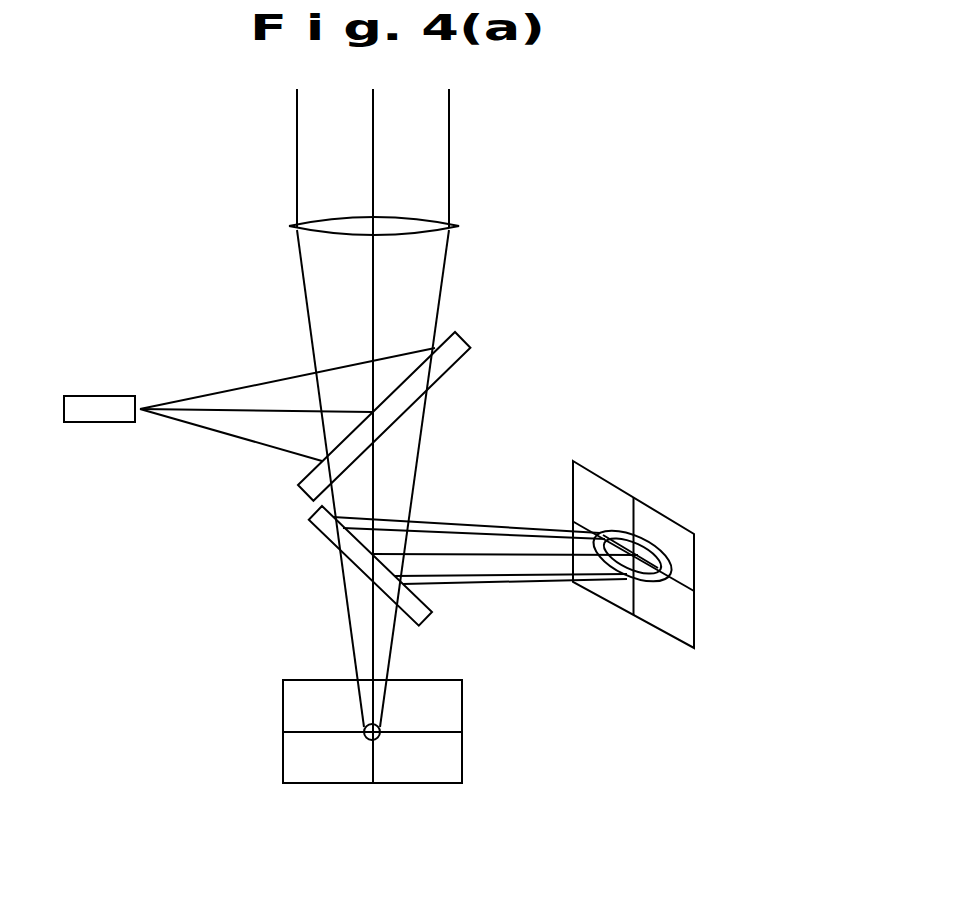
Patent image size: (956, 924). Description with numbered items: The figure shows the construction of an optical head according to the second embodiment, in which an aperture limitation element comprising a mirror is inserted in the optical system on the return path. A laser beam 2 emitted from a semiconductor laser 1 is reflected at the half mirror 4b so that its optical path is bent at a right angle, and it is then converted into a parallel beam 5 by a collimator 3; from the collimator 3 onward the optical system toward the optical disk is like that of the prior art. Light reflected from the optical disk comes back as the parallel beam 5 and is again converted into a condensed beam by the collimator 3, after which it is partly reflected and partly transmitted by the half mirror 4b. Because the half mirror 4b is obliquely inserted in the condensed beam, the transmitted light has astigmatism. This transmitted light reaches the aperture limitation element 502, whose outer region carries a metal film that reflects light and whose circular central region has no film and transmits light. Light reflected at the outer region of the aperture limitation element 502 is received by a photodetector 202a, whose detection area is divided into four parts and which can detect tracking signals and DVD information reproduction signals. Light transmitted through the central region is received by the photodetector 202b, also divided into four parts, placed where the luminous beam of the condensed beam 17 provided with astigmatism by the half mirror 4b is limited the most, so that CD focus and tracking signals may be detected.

The semiconductor laser 1 is at (99, 389).
The laser beam 2 is at (287, 404).
The collimator 3 is at (392, 227).
The half mirror 4b is at (415, 416).
The parallel beam 5 is at (452, 123).
The condensed beam 17 is at (375, 642).
The photodetector 202a is at (525, 554).
The photodetector 202b is at (373, 757).
The aperture limitation element 502 is at (319, 524).